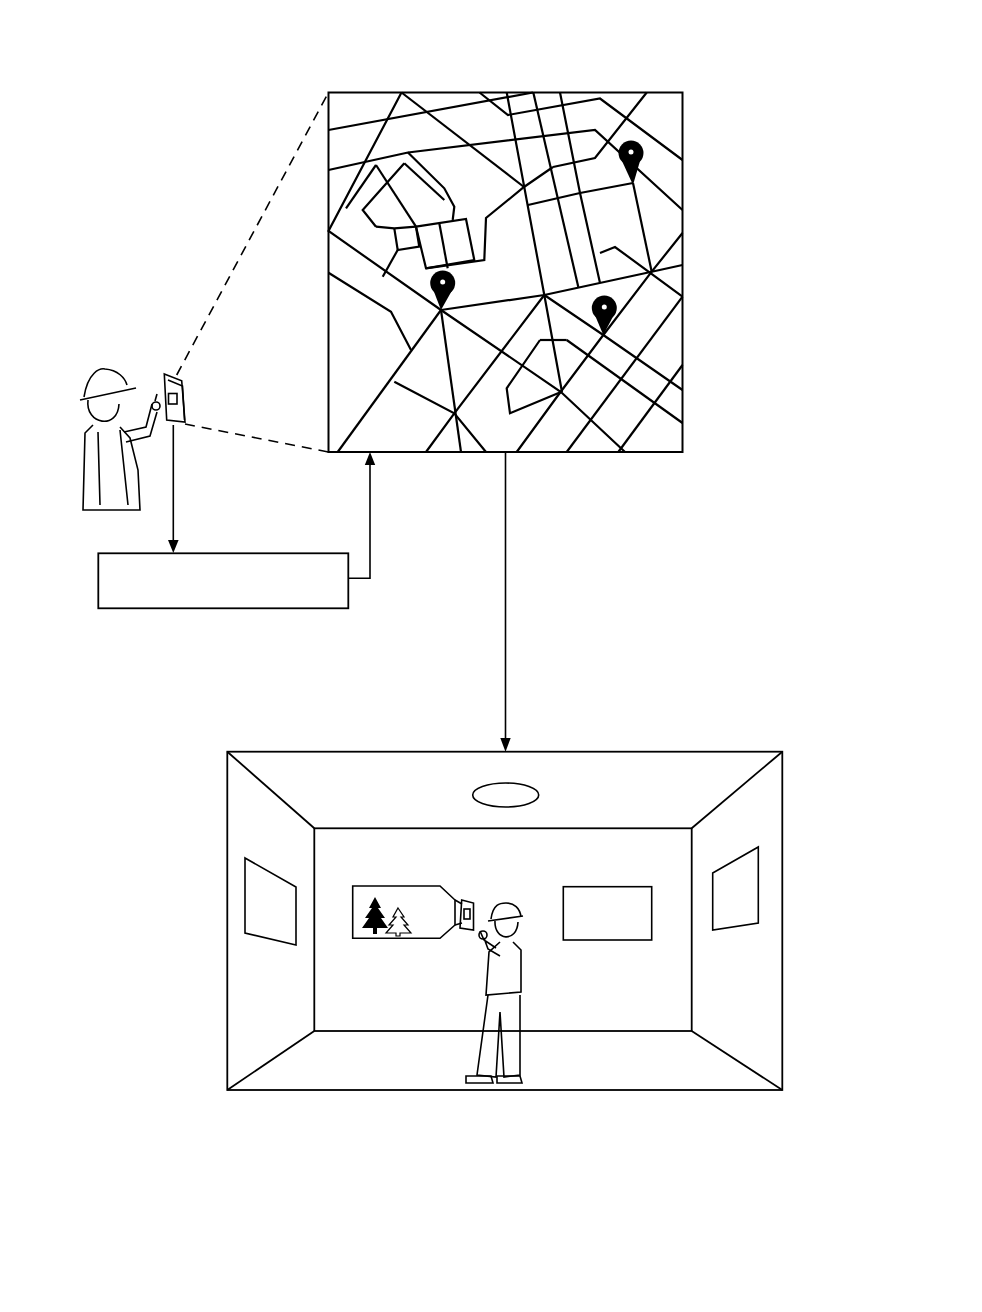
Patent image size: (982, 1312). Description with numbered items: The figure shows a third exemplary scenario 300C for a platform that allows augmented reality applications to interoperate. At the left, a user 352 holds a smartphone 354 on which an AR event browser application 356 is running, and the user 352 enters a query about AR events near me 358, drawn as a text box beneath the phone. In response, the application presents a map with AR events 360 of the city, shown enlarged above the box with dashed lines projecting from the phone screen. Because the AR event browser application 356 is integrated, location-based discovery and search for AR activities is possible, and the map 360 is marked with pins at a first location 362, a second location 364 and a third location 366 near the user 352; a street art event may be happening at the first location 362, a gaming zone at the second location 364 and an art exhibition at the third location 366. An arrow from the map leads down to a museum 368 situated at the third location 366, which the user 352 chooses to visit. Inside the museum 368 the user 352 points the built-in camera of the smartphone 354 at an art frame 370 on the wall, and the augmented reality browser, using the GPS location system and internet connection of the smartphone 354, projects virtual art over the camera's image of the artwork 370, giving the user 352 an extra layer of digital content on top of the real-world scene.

The third exemplary scenario 300C is at (176, 56).
The user 352 is at (83, 378).
The smartphone 354 is at (176, 375).
The AR event browser application 356 is at (186, 400).
The query about AR events near me 358 is at (224, 609).
The map with AR events 360 is at (506, 92).
The first location 362 is at (645, 152).
The second location 364 is at (430, 306).
The third location 366 is at (617, 309).
The museum 368 is at (681, 767).
The art frame 370 is at (345, 874).